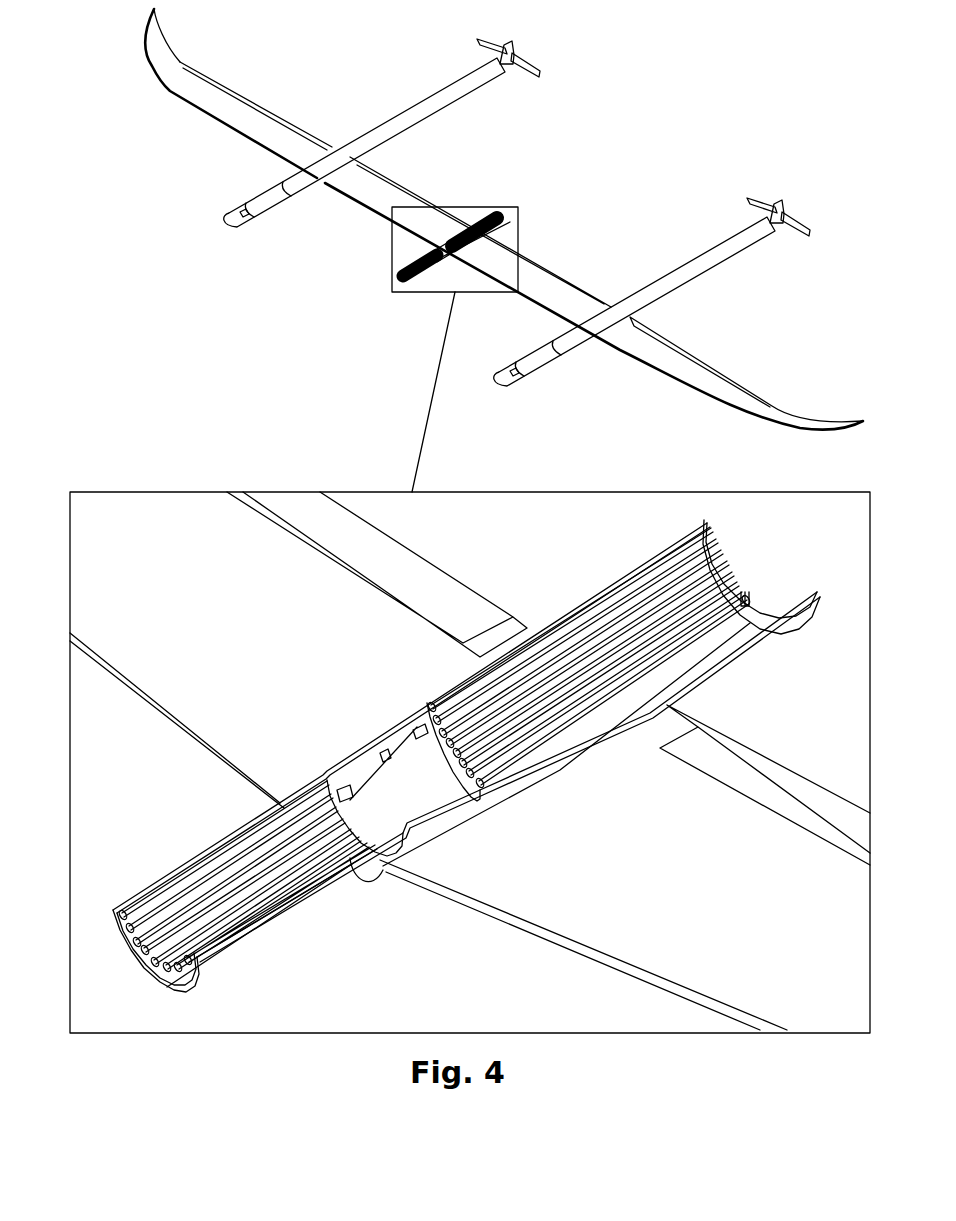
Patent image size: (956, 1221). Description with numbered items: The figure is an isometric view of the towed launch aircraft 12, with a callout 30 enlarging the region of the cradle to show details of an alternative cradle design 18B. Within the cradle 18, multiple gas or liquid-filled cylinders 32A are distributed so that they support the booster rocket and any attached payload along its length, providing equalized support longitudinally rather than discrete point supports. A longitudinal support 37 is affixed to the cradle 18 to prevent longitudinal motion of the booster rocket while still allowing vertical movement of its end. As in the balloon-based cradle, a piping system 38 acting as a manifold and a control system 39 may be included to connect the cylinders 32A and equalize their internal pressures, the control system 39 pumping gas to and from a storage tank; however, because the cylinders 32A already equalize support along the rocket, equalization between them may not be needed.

The towed launch aircraft 12 is at (546, 372).
The cradle 18 is at (820, 612).
The cradle design 18B is at (509, 225).
The callout 30 is at (512, 207).
The gas or liquid-filled cylinders 32A is at (143, 965).
The longitudinal support 37 is at (750, 593).
The piping system 38 is at (358, 760).
The control system 39 is at (364, 775).